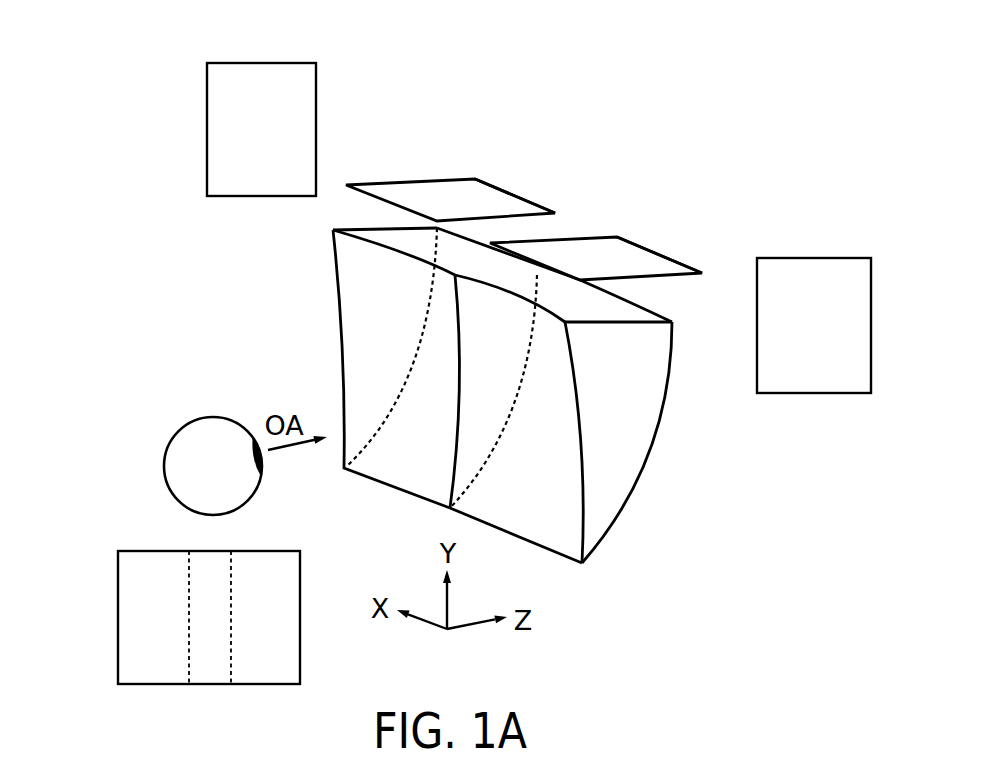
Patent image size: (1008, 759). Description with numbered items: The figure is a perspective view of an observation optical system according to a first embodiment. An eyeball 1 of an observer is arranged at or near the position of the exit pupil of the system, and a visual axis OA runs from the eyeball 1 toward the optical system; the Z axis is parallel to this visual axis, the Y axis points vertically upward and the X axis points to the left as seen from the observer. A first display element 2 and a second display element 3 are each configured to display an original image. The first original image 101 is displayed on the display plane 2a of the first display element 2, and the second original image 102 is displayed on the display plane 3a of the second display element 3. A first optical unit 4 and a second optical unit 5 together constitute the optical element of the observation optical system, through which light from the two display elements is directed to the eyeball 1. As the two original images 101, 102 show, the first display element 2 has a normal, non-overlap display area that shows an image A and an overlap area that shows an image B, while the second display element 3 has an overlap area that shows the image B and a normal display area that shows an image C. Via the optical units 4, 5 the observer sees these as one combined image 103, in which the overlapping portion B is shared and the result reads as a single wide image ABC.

The eyeball of an observer 1 is at (200, 426).
The first display element 2 is at (402, 192).
The display plane of the first display element 2a is at (533, 214).
The second display element 3 is at (635, 252).
The display plane of the second display element 3a is at (663, 283).
The first optical unit 4 is at (350, 263).
The second optical unit 5 is at (611, 490).
The first original image 101 is at (268, 73).
The second original image 102 is at (803, 381).
The combined image 103 is at (137, 580).